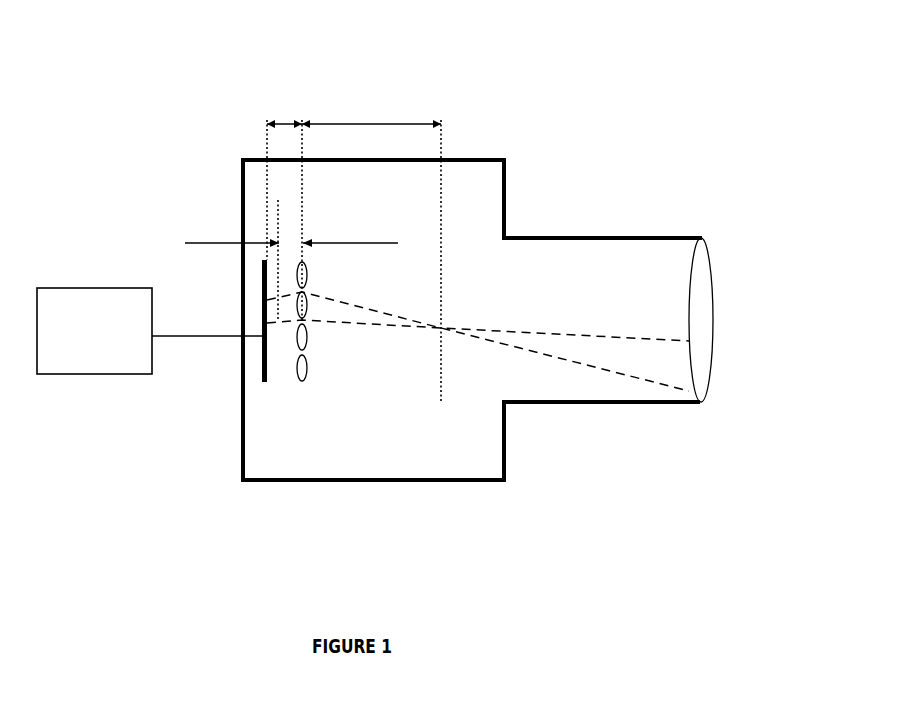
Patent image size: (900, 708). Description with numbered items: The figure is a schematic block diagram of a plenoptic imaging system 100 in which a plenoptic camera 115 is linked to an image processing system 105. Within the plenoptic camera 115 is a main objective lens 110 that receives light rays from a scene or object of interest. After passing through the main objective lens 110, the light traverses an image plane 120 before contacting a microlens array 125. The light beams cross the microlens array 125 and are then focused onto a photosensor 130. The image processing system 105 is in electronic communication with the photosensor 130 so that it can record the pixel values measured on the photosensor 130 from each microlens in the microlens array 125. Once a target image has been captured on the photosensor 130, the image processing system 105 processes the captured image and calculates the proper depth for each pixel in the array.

The plenoptic imaging system 100 is at (518, 50).
The image processing system 105 is at (97, 288).
The main objective lens 110 is at (718, 312).
The plenoptic camera 115 is at (531, 320).
The image plane 120 is at (441, 413).
The microlens array 125 is at (304, 395).
The photosensor 130 is at (260, 383).